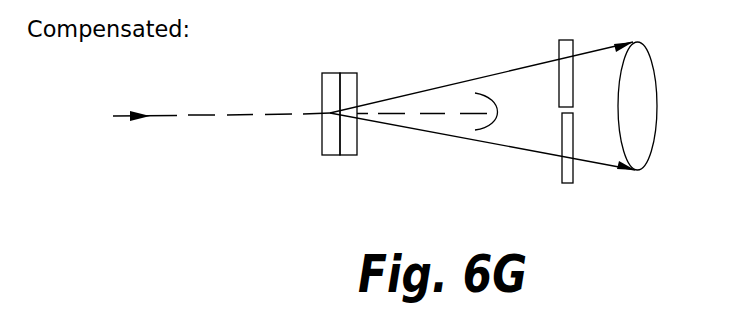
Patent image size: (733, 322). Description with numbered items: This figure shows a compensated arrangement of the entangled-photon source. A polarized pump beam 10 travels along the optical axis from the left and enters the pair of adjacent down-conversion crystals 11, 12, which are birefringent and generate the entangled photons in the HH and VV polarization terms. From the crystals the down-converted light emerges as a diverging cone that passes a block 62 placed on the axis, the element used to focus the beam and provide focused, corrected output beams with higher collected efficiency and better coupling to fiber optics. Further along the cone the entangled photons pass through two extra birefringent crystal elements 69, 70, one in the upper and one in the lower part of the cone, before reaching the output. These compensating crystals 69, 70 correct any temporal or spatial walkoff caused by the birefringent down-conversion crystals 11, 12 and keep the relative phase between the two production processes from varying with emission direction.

The polarized pump beam 10 is at (167, 114).
The down-conversion crystal 11 is at (322, 139).
The down-conversion crystal 12 is at (357, 138).
The block 62 is at (493, 93).
The birefringent crystal element 69 is at (566, 38).
The birefringent crystal element 70 is at (567, 186).